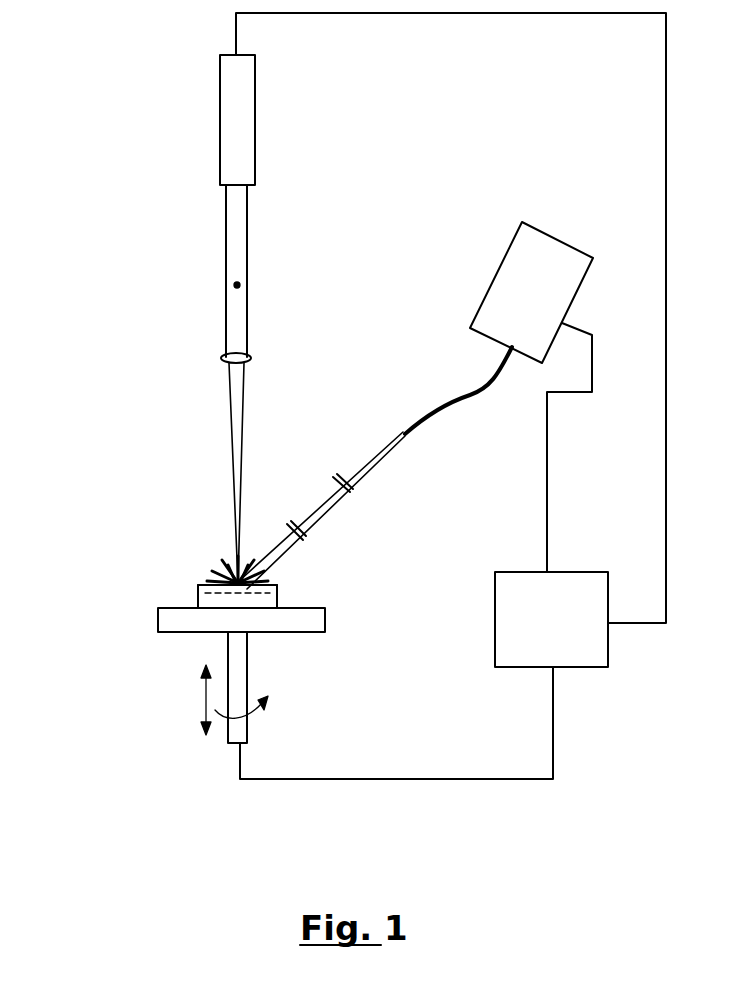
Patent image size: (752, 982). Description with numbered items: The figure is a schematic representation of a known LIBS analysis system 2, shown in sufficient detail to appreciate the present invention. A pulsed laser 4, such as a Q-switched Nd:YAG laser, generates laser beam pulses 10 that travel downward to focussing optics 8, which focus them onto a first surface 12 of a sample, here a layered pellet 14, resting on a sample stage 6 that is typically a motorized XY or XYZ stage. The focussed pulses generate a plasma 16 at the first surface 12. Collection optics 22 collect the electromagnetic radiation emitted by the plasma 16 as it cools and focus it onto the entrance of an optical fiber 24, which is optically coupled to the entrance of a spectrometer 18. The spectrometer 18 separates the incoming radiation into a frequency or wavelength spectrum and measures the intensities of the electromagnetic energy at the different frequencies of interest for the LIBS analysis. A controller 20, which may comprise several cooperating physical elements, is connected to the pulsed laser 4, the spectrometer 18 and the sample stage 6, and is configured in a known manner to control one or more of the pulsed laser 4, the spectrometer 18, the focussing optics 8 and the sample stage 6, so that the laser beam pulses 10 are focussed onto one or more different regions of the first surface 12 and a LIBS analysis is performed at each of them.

The LIBS analysis system 2 is at (135, 244).
The pulsed laser 4 is at (255, 105).
The sample stage 6 is at (158, 617).
The focussing optics 8 is at (221, 358).
The laser beam pulses 10 is at (240, 285).
The first surface 12 is at (272, 582).
The layered pellet 14 is at (198, 603).
The plasma 16 is at (215, 577).
The spectrometer 18 is at (540, 299).
The controller 20 is at (562, 627).
The collection optics 22 is at (272, 522).
The optical fiber 24 is at (470, 393).